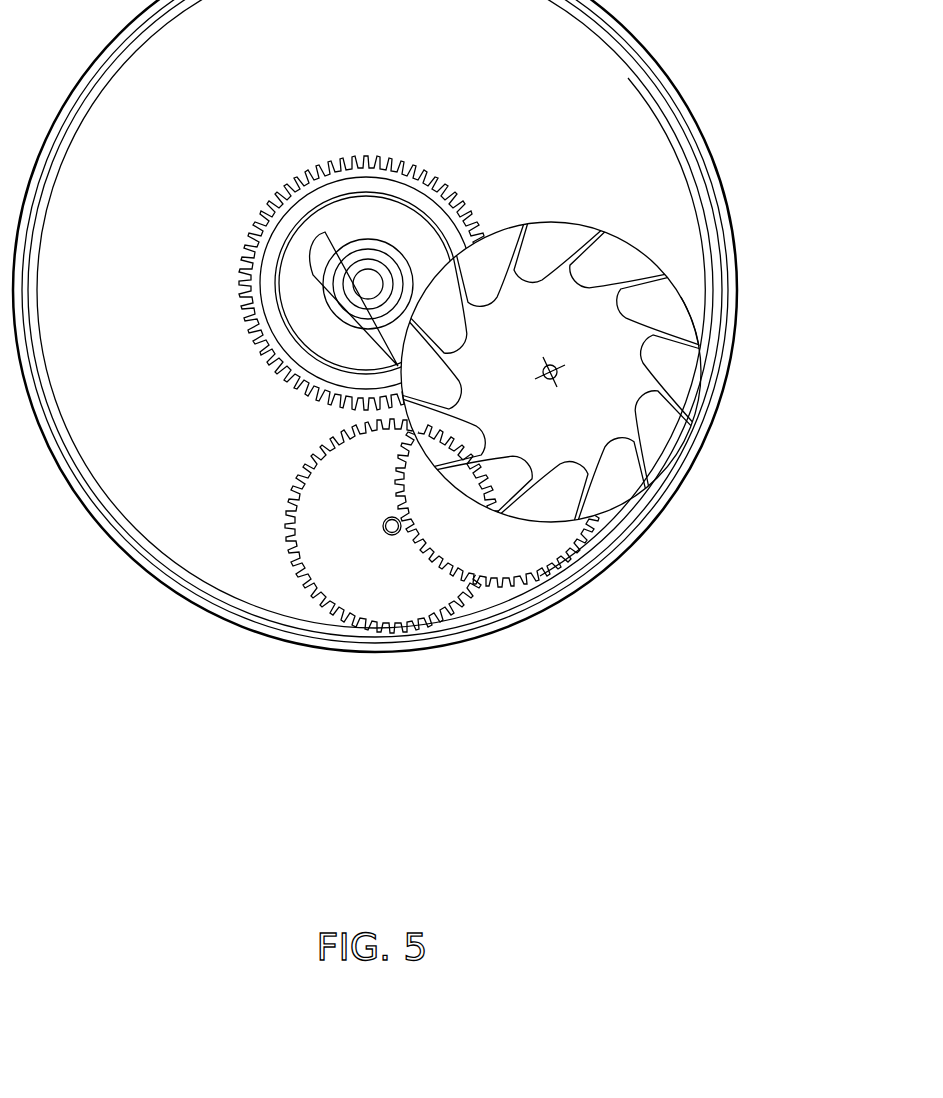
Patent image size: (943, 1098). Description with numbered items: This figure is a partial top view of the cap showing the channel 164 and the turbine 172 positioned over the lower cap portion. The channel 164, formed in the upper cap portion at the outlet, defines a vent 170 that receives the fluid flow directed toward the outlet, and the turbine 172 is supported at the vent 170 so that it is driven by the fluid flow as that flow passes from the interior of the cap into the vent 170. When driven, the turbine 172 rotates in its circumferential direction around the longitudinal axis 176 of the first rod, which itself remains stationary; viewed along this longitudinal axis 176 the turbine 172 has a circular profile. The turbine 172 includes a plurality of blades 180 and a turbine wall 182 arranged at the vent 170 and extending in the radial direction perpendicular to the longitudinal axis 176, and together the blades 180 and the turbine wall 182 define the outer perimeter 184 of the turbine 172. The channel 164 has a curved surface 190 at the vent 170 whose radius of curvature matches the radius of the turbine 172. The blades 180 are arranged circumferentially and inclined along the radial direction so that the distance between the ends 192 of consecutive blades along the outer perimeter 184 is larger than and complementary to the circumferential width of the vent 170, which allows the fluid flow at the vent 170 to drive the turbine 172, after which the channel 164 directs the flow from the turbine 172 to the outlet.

The channel 164 is at (320, 257).
The vent 170 is at (430, 408).
The turbine 172 is at (607, 390).
The longitudinal axis 176 is at (558, 370).
The blades 180 is at (637, 280).
The turbine wall 182 is at (660, 432).
The outer perimeter 184 is at (692, 320).
The curved surface 190 is at (405, 400).
The ends of consecutive blades 192 is at (387, 275).